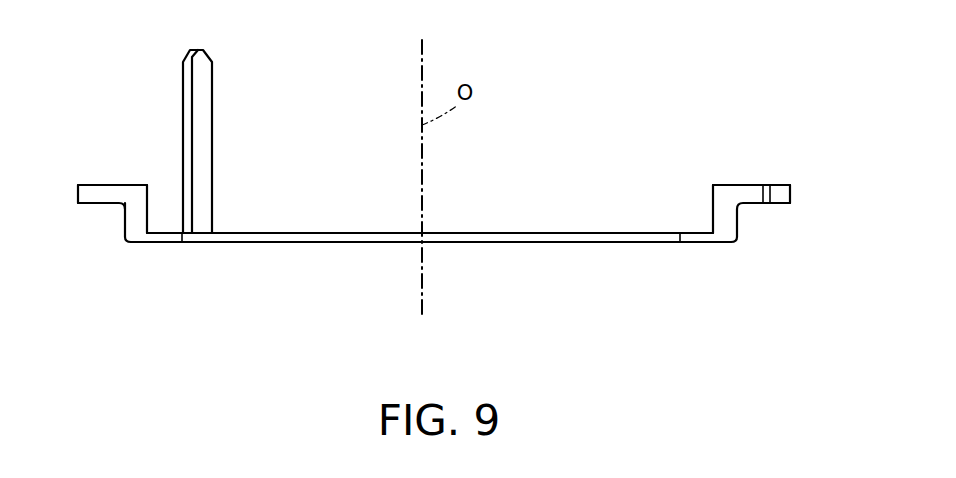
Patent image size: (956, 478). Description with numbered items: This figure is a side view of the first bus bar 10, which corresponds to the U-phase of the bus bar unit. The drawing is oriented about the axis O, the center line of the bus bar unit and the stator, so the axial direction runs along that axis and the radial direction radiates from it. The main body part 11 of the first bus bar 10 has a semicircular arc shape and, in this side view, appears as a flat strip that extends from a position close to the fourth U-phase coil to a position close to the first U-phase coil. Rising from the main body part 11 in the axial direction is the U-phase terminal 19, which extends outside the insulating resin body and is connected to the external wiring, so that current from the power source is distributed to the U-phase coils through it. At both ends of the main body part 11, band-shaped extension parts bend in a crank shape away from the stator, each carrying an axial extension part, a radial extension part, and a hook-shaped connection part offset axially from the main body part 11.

The first bus bar 10 is at (618, 202).
The main body part 11 is at (303, 237).
The U-phase terminal 19 is at (197, 100).